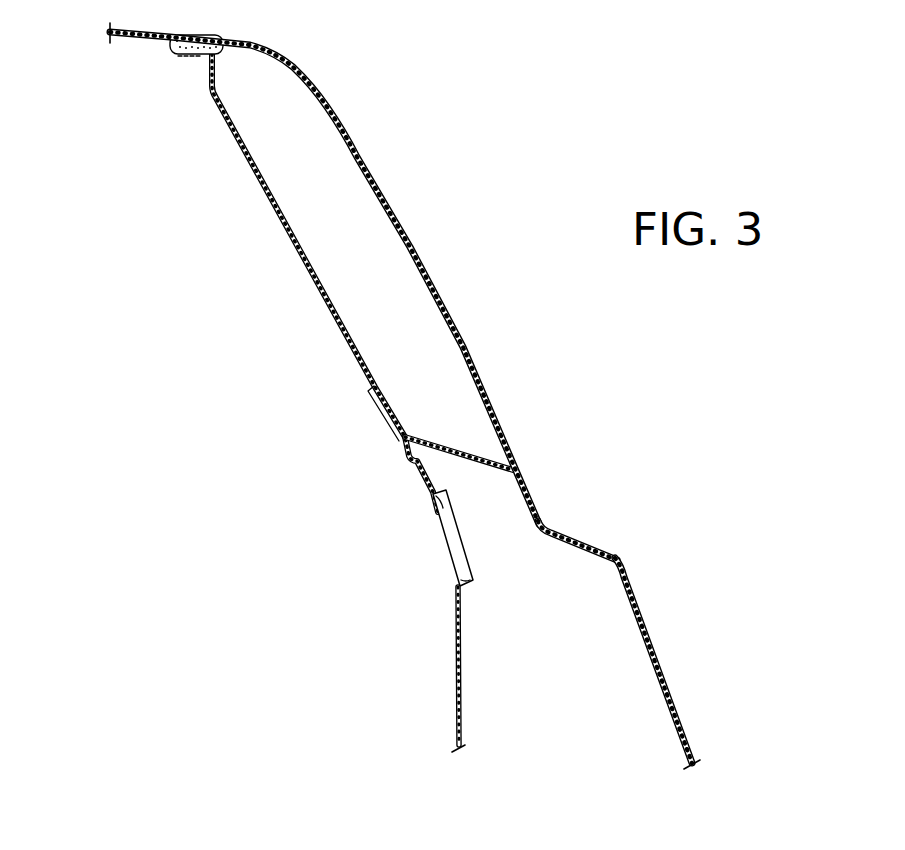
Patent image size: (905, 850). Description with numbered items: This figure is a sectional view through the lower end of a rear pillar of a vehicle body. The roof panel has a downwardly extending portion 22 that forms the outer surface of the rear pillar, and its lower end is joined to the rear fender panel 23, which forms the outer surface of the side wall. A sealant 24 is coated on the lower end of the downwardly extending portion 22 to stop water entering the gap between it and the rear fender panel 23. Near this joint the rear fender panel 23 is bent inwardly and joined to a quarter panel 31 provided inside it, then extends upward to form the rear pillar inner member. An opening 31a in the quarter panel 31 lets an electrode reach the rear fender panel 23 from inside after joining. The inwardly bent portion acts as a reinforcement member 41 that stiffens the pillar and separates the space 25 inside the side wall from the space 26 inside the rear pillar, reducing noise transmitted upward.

The downwardly extending portion 22 is at (460, 331).
The rear fender panel 23 is at (637, 592).
The sealant 24 is at (541, 529).
The space 25 is at (544, 663).
The space 26 is at (442, 385).
The quarter panel 31 is at (457, 639).
The opening 31a is at (438, 512).
The reinforcement member 41 is at (477, 466).